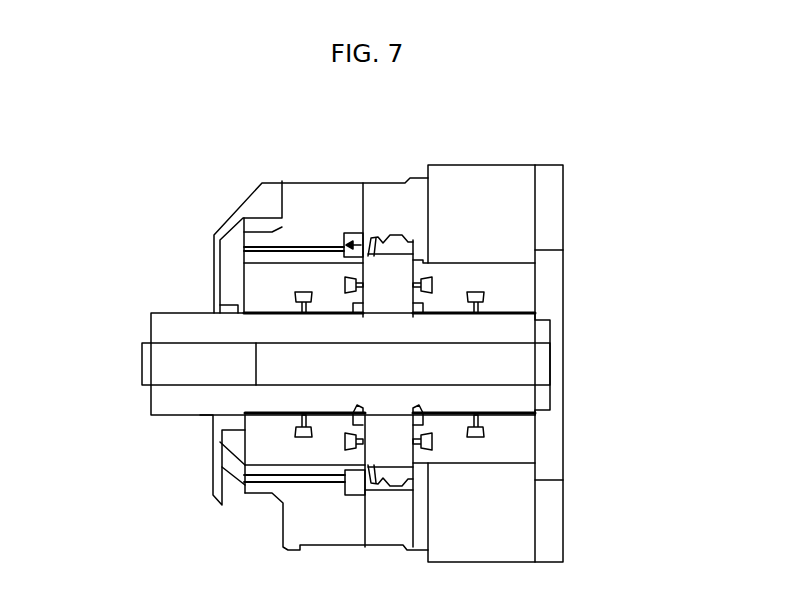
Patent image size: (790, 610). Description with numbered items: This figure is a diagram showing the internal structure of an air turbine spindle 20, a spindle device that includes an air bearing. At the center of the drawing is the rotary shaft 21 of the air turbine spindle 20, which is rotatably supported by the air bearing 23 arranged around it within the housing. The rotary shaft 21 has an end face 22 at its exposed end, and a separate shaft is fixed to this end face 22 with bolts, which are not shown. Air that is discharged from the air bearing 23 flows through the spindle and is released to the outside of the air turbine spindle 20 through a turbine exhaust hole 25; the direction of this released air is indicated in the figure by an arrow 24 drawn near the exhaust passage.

The air turbine spindle 20 is at (262, 181).
The rotary shaft 21 is at (175, 312).
The end face 22 is at (142, 357).
The air bearing 23 is at (508, 313).
The arrow 24 is at (414, 255).
The turbine exhaust hole 25 is at (248, 249).